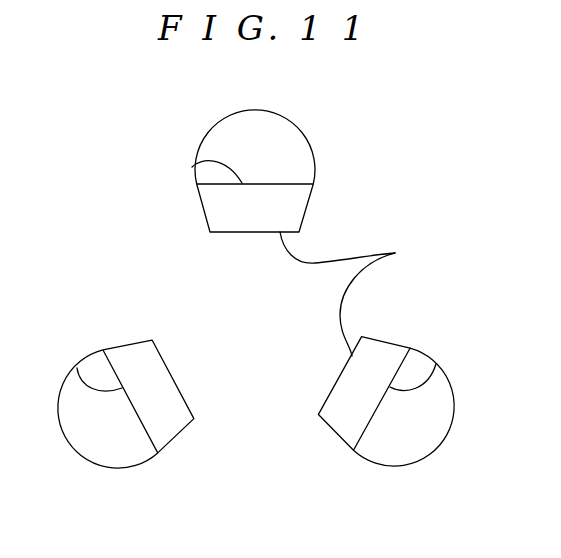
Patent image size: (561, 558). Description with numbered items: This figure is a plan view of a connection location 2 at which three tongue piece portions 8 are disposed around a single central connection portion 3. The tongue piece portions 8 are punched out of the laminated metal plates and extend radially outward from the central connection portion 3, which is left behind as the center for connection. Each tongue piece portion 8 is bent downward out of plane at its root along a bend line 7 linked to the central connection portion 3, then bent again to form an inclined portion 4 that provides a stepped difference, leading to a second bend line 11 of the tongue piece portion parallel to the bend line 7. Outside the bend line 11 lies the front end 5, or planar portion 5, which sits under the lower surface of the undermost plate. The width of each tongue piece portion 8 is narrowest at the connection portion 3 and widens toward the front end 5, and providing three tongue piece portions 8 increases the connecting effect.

The connection location 2 is at (413, 193).
The central connection portion 3 is at (248, 323).
The inclined portion 4 is at (338, 428).
The front end 5 is at (392, 457).
The bend line 7 is at (347, 294).
The tongue piece portion 8 is at (276, 143).
The bend line of the tongue piece portion 11 is at (192, 167).